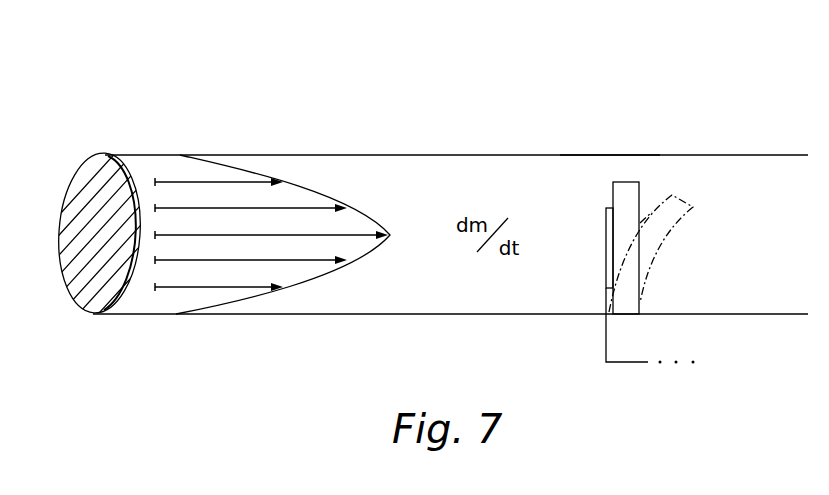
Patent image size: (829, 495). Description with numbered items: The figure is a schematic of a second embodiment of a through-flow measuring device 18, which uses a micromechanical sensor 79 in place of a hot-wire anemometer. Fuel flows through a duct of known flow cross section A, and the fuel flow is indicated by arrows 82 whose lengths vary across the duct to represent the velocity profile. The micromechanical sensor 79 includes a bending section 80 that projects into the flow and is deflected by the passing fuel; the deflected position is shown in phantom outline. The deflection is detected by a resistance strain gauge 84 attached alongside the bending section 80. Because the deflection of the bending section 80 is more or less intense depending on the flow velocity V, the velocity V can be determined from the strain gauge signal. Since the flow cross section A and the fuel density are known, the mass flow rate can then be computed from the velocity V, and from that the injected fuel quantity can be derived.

The through-flow measuring device 18 is at (586, 138).
The micromechanical sensor 79 is at (628, 176).
The bending section 80 is at (639, 200).
The fuel flow arrows 82 is at (220, 288).
The resistance strain gauge 84 is at (606, 247).
The flow cross section A is at (100, 255).
The flow velocity V is at (310, 262).